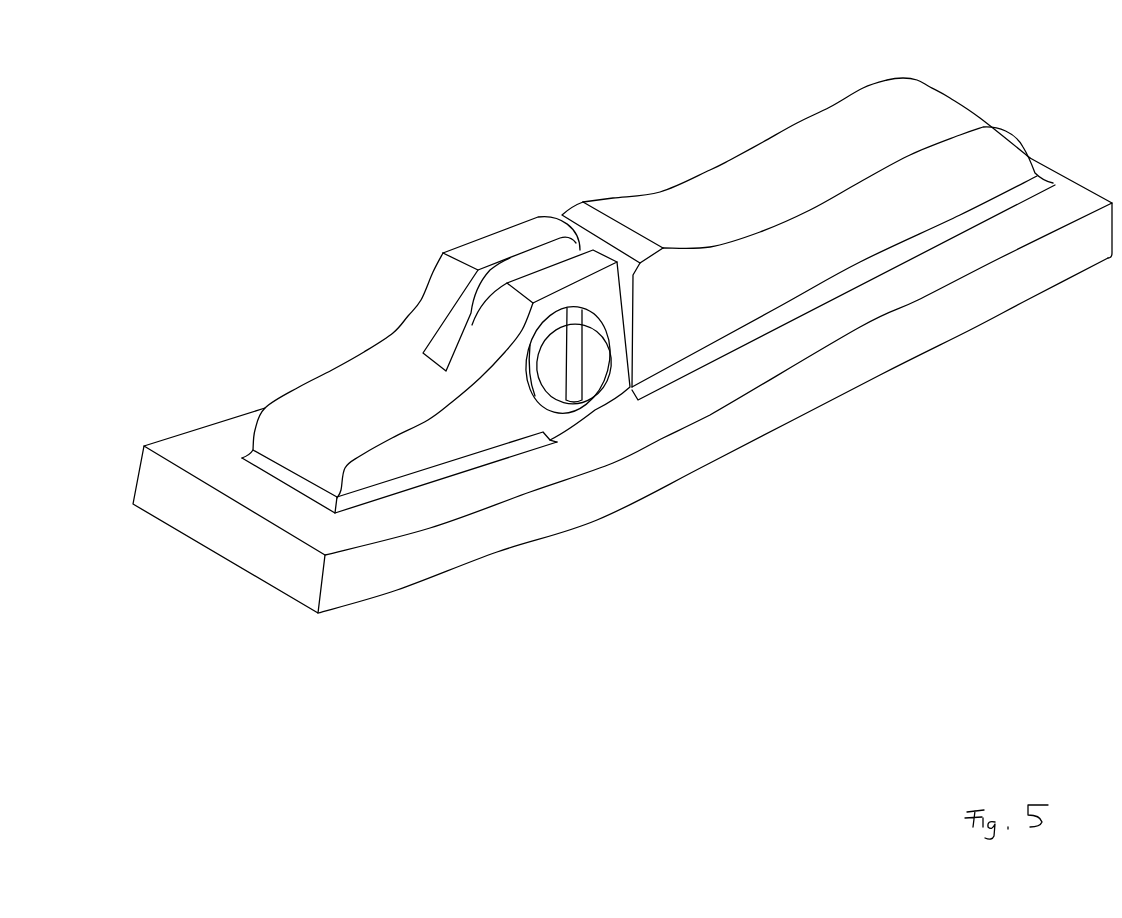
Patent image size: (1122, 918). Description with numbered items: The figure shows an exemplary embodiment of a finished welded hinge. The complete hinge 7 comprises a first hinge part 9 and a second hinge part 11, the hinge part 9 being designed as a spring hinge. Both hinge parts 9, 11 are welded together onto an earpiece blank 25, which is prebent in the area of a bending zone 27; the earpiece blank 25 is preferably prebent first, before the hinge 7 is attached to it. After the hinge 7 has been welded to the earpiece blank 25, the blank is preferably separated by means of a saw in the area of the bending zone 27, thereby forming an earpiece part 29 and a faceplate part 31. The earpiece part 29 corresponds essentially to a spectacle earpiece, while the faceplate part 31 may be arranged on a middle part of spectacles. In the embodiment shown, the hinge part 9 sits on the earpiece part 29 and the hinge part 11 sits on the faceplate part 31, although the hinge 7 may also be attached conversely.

The hinge 7 is at (422, 117).
The first hinge part 9 is at (792, 106).
The second hinge part 11 is at (378, 317).
The earpiece blank 25 is at (732, 498).
The bending zone 27 is at (630, 513).
The earpiece part 29 is at (903, 352).
The faceplate part 31 is at (460, 565).